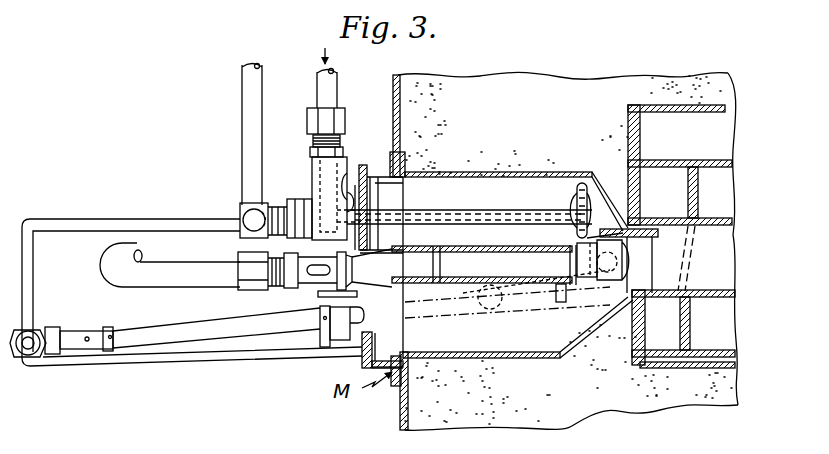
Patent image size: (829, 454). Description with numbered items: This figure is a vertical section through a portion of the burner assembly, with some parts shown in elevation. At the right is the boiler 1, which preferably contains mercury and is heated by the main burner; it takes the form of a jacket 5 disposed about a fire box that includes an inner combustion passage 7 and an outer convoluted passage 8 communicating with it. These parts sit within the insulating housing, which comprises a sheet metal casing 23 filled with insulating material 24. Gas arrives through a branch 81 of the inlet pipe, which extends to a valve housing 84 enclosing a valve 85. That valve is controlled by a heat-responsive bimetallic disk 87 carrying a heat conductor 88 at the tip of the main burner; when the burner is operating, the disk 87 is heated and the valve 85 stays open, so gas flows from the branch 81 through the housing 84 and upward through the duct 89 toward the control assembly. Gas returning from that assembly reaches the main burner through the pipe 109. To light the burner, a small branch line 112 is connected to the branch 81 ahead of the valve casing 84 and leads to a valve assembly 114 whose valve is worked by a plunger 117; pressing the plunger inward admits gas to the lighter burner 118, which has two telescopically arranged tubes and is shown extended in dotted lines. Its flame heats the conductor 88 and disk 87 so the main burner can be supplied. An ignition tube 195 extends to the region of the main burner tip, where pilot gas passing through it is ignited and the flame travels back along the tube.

The boiler 1 is at (628, 127).
The jacket 5 is at (660, 364).
The inner combustion passage 7 is at (726, 232).
The outer convoluted passage 8 is at (733, 325).
The sheet metal casing 23 is at (550, 377).
The insulating material 24 is at (559, 124).
The branch pipe 81 is at (247, 119).
The valve housing 84 is at (344, 172).
The valve 85 is at (321, 214).
The heat-responsive bimetallic disk 87 is at (578, 199).
The heat conductor 88 is at (640, 240).
The duct 89 is at (322, 88).
The pipe 109 is at (157, 270).
The branch line 112 is at (83, 228).
The valve assembly 114 is at (48, 334).
The plunger 117 is at (25, 355).
The lighter burner 118 is at (205, 319).
The ignition tube 195 is at (541, 270).